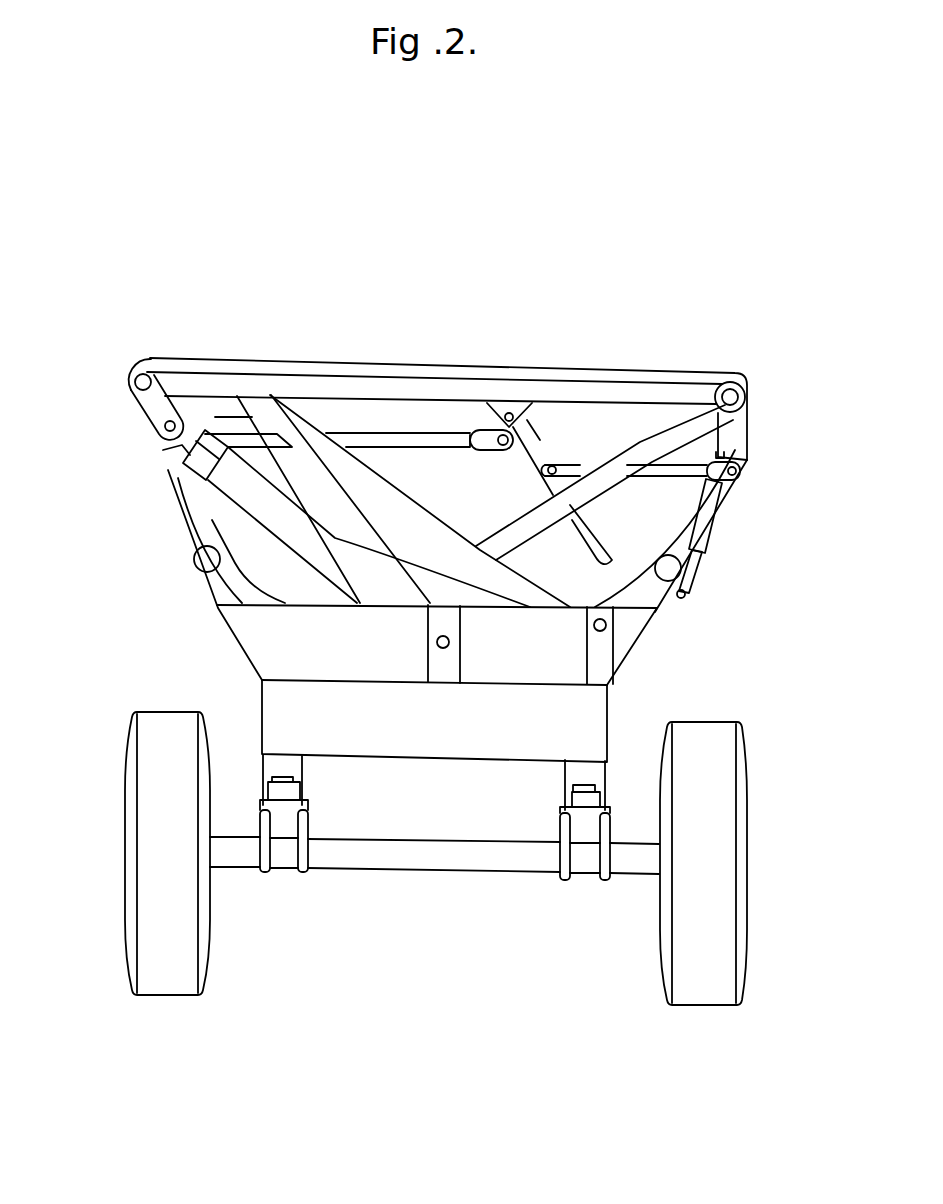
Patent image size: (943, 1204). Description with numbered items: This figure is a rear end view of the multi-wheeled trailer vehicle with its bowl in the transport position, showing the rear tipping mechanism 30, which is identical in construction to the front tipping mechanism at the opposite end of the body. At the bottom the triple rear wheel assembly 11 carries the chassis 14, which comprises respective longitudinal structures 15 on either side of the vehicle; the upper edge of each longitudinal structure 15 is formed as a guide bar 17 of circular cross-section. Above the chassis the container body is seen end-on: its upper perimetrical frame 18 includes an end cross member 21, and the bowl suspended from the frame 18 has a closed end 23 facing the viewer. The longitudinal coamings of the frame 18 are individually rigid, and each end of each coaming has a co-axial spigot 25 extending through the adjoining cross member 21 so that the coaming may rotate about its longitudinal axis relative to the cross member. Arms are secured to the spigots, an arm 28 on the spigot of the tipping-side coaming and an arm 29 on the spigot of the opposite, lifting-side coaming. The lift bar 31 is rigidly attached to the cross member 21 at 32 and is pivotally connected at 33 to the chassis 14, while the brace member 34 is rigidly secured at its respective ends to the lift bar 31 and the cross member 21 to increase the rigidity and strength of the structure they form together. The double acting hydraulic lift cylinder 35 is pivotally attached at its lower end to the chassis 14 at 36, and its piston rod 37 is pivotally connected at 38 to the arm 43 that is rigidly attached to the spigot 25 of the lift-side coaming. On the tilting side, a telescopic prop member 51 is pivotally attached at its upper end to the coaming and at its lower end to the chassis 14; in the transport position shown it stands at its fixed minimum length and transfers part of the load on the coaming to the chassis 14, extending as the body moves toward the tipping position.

The triple rear wheel assembly 11 is at (720, 846).
The chassis 14 is at (270, 707).
The longitudinal structure 15 is at (230, 636).
The guide bar 17 is at (196, 560).
The upper perimetrical frame 18 is at (392, 350).
The end cross member 21 is at (485, 350).
The closed end 23 is at (583, 420).
The spigot 25 is at (143, 356).
The arm 28 is at (740, 424).
The arm 29 is at (163, 462).
The tipping mechanism 30 is at (311, 487).
The lift bar 31 is at (405, 504).
The rigid attachment of lift bar to cross member 32 is at (260, 383).
The pivotal connection of lift bar to chassis 33 is at (608, 628).
The brace member 34 is at (655, 436).
The double acting hydraulic lift cylinder 35 is at (319, 543).
The pivotal attachment of lift cylinder to chassis 36 is at (443, 650).
The piston rod 37 is at (190, 430).
The pivotal connection of piston rod to arm 38 is at (163, 428).
The arm 43 is at (133, 402).
The telescopic prop member 51 is at (718, 505).